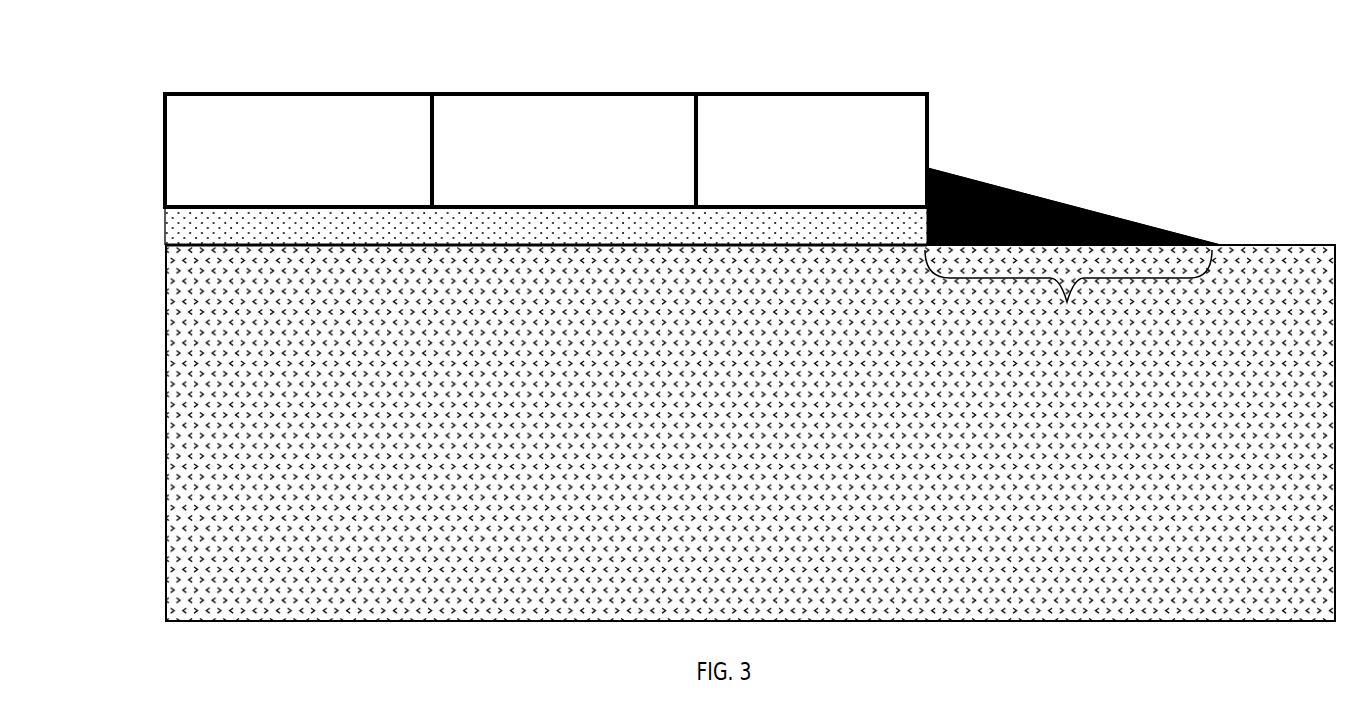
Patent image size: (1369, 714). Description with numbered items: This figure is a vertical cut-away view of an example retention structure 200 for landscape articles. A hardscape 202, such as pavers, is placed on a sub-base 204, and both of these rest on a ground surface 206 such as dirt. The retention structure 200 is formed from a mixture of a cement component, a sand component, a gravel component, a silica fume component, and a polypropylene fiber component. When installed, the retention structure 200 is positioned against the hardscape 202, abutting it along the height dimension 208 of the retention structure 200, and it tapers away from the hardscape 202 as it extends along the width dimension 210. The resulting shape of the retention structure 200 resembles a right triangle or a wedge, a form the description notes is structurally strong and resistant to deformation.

The retention structure 200 is at (1022, 192).
The hardscape 202 is at (386, 108).
The sub-base 204 is at (176, 228).
The ground surface 206 is at (182, 394).
The height dimension 208 is at (927, 160).
The width dimension 210 is at (1068, 296).